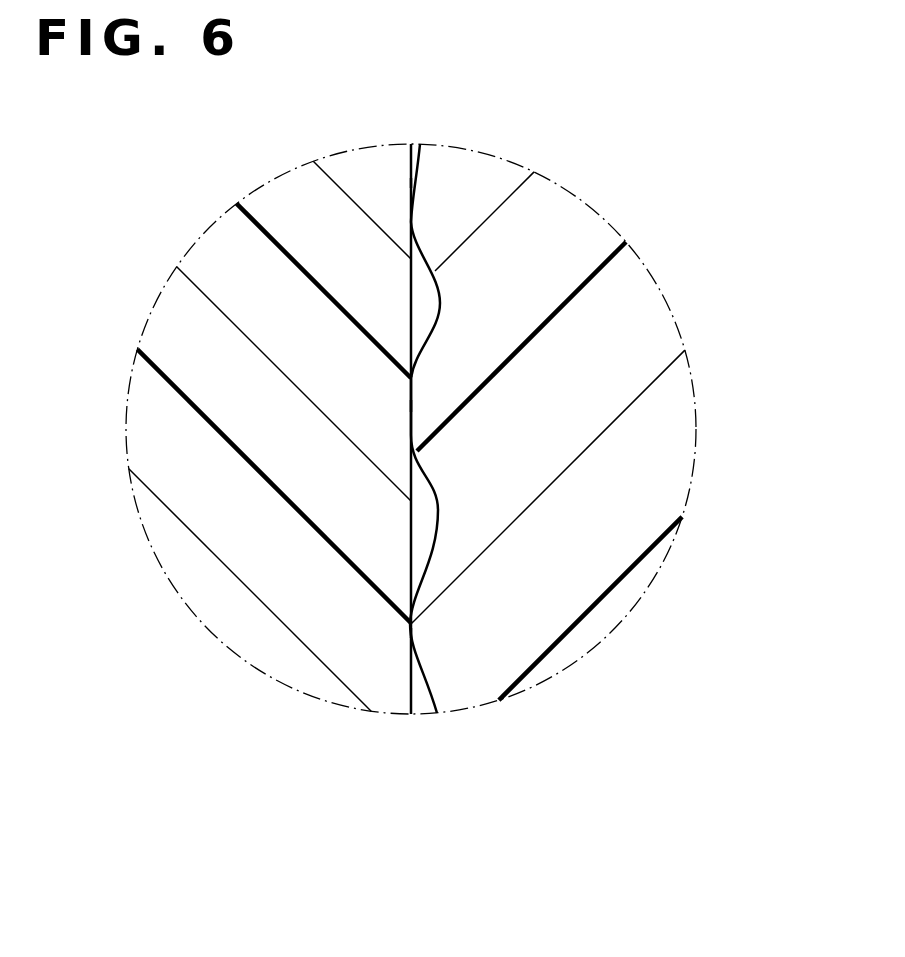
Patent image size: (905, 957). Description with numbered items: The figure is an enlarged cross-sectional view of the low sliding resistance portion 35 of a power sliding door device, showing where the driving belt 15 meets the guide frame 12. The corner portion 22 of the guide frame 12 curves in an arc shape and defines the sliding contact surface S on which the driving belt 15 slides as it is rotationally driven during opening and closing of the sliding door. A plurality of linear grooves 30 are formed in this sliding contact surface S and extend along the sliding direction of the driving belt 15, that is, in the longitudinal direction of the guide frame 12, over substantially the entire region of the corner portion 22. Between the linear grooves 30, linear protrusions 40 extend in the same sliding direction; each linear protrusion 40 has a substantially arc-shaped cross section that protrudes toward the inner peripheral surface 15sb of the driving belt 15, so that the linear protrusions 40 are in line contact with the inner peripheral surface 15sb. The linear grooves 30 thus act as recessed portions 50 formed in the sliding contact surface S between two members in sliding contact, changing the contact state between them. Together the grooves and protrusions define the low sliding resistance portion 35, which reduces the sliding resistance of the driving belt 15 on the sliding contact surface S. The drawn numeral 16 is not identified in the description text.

The driving belt 15 is at (270, 436).
The first panel 16 is at (208, 248).
The guide frame 12 is at (603, 436).
The corner portion 22 is at (652, 300).
The inner peripheral surface 15sb is at (413, 292).
The linear groove 30 is at (479, 428).
The recessed portion 50 is at (433, 318).
The linear protrusion 40 is at (412, 183).
The sliding contact surface S is at (431, 751).
The low sliding resistance portion 35 is at (418, 712).